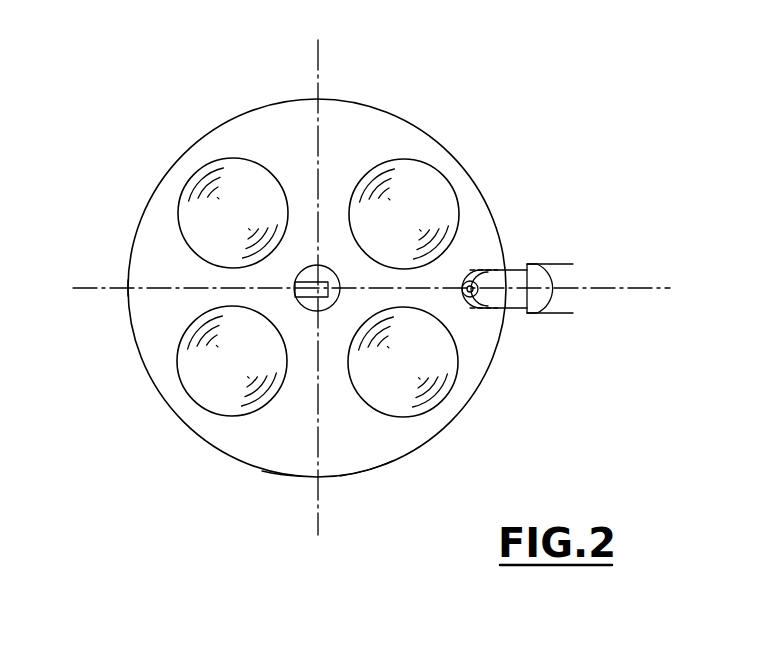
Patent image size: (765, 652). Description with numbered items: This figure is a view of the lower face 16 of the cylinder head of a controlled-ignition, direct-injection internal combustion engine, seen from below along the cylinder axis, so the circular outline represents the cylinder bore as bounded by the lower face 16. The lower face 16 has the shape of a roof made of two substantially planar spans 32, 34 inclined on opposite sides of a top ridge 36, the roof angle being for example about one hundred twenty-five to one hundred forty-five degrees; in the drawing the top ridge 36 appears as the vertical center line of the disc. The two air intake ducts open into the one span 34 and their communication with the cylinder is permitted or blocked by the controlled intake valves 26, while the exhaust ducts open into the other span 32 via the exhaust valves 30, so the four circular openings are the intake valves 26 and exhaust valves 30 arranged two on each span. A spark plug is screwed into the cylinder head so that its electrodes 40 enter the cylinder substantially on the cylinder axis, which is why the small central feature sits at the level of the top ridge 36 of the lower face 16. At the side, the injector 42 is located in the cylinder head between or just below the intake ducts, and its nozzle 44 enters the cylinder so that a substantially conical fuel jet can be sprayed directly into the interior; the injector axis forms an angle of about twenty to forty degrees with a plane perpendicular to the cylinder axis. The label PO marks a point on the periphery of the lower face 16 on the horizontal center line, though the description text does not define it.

The lower face 16 is at (283, 138).
The reference point on periphery PO is at (155, 288).
The electrodes 40 is at (307, 282).
The injector 42 is at (563, 266).
The nozzle 44 is at (469, 303).
The intake valves 26 is at (398, 395).
The exhaust valves 30 is at (213, 386).
The span 32 is at (287, 453).
The span 34 is at (368, 445).
The top ridge 36 is at (318, 508).